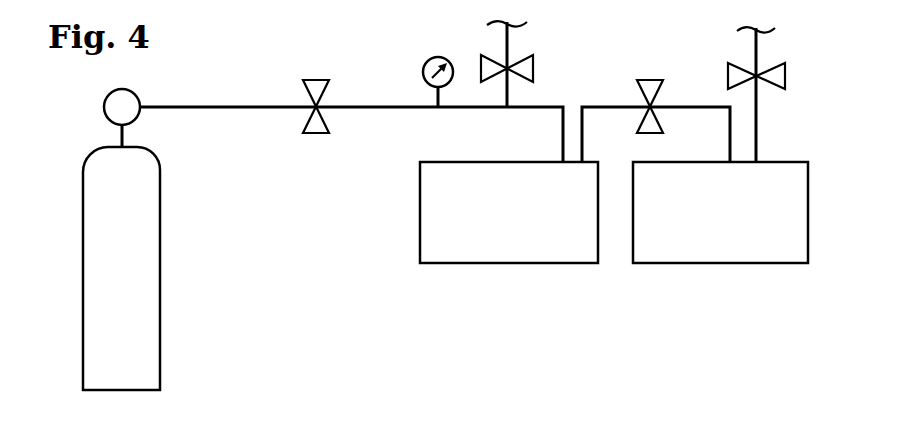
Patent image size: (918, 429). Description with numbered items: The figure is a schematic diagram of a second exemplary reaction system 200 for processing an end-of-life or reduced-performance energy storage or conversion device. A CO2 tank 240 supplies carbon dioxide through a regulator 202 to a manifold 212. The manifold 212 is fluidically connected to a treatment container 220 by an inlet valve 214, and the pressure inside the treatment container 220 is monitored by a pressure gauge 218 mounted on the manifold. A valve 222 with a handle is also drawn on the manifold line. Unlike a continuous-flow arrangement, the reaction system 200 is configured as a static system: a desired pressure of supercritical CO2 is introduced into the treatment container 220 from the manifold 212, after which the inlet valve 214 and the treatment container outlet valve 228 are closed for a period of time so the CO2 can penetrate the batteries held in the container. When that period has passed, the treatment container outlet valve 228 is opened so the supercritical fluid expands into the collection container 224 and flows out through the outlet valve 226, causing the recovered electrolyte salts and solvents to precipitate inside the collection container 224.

The reaction system 200 is at (794, 33).
The regulator 202 is at (137, 71).
The manifold 212 is at (217, 104).
The inlet valve 214 is at (318, 80).
The pressure gauge 218 is at (437, 57).
The treatment container 220 is at (537, 263).
The valve 222 is at (536, 68).
The collection container 224 is at (745, 263).
The outlet valve 226 is at (787, 77).
The treatment container outlet valve 228 is at (664, 66).
The CO2 cylinder 240 is at (153, 382).